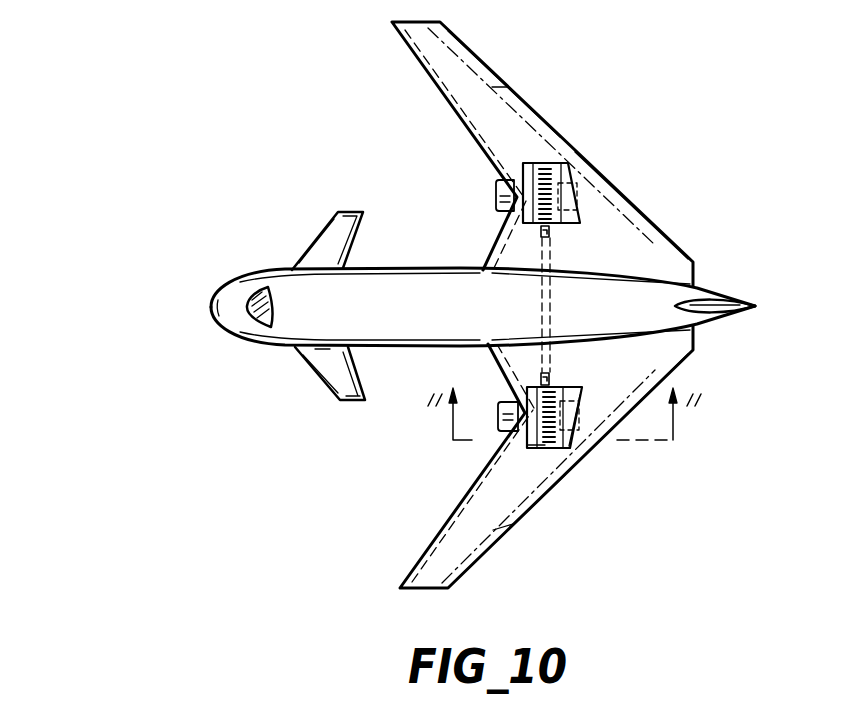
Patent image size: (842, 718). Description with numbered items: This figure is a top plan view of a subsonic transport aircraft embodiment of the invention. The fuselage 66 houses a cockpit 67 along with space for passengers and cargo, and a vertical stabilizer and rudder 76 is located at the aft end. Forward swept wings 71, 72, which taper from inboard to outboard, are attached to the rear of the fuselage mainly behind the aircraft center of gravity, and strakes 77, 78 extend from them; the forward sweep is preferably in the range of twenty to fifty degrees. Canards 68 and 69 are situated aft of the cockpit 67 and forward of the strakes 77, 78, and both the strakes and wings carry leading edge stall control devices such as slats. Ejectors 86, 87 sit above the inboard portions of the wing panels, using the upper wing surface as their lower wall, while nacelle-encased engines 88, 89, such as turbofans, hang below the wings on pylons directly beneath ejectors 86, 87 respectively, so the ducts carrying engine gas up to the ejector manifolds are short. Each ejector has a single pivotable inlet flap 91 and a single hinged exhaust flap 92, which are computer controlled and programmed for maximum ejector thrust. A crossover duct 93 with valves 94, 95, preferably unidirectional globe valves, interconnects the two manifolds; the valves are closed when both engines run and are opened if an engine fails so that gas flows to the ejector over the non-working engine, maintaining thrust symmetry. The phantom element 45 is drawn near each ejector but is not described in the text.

The exhaust nozzle (phantom) 45 is at (563, 212).
The fuselage 66 is at (400, 268).
The cockpit 67 is at (256, 330).
The canard 68 is at (343, 373).
The canard 69 is at (325, 250).
The forward swept wing 71 is at (488, 502).
The forward swept wing 72 is at (498, 113).
The vertical stabilizer and rudder 76 is at (720, 303).
The strake 77 is at (510, 357).
The strake 78 is at (510, 243).
The ejector 86 is at (555, 450).
The ejector 87 is at (553, 168).
The nacelle-encased engine 88 is at (500, 423).
The nacelle-encased engine 89 is at (497, 183).
The pivotable inlet flap 91 is at (532, 448).
The hinged exhaust flap 92 is at (573, 450).
The crossover duct 93 is at (552, 305).
The valve 94 is at (552, 377).
The valve 95 is at (548, 234).